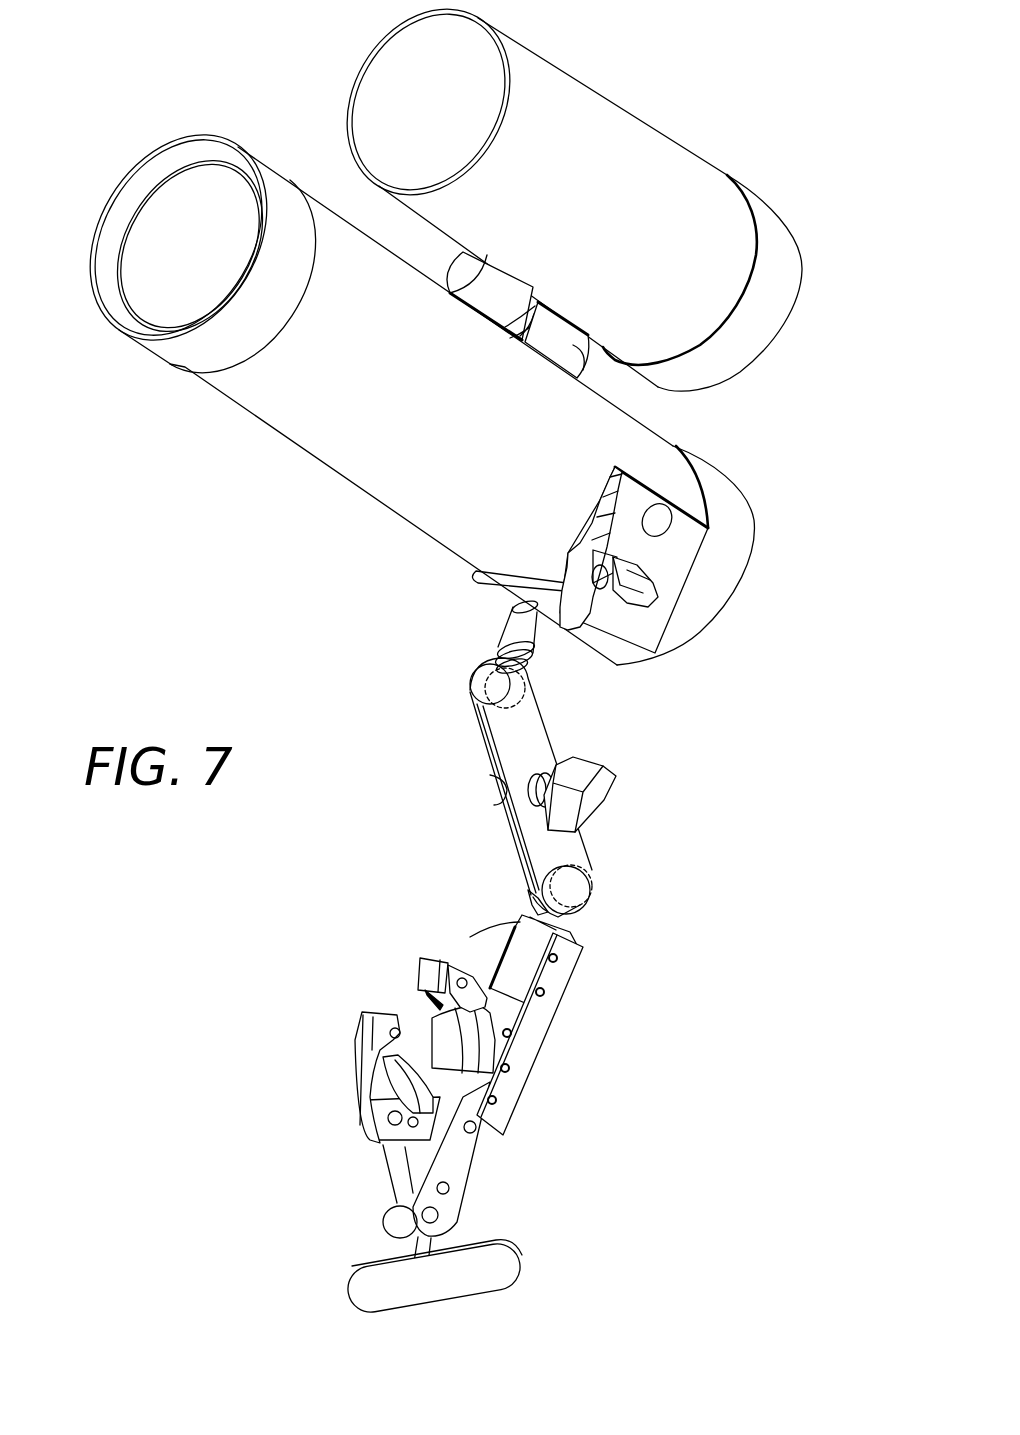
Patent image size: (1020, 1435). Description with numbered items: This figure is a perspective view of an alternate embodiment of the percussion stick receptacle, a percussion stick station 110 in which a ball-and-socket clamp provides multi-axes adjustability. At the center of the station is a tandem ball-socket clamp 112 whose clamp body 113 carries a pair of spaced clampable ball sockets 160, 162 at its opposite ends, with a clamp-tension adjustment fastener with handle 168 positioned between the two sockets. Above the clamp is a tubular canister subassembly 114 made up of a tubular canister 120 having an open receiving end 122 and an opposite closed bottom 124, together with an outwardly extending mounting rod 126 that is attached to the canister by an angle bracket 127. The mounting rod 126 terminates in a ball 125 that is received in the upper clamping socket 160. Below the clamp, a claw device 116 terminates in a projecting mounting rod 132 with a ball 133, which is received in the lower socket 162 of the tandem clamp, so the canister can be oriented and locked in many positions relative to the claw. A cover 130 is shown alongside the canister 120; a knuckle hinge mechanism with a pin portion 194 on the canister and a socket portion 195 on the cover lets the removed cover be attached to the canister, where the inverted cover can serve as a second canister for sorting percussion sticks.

The percussion stick station 110 is at (770, 752).
The tandem ball-socket clamp 112 is at (483, 757).
The clamp body 113 is at (540, 738).
The tubular canister subassembly 114 is at (407, 521).
The claw device 116 is at (496, 1150).
The tubular canister 120 is at (285, 415).
The open receiving end 122 is at (133, 283).
The closed bottom 124 is at (678, 463).
The ball 125 is at (478, 672).
The mounting rod 126 is at (537, 632).
The angle bracket 127 is at (640, 628).
The cover 130 is at (562, 92).
The mounting rod 132 is at (530, 945).
The ball 133 is at (583, 885).
The clamping ball socket 160 is at (480, 700).
The clamping ball socket 162 is at (528, 885).
The clamp-tension adjustment fastener with handle 168 is at (600, 775).
The pin portion 194 is at (613, 382).
The socket portion 195 is at (456, 275).